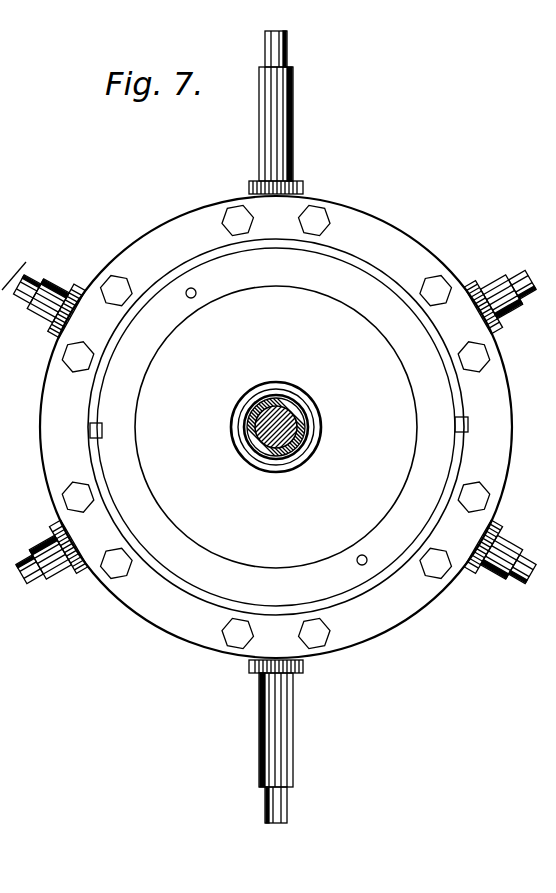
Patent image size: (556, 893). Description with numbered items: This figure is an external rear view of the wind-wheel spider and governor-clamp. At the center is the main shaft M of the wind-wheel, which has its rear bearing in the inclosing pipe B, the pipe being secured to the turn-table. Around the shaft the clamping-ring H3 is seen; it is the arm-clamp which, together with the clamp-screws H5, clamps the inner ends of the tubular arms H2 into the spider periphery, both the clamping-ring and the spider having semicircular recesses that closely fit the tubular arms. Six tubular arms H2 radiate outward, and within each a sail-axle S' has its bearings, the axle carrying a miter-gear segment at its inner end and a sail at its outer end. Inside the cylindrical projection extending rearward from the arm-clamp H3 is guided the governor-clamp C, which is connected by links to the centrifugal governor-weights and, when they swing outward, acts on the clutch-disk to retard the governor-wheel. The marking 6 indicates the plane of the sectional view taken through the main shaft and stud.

The clamping-ring H3 is at (276, 427).
The governor-clamp C is at (359, 555).
The inclosing pipe B is at (306, 429).
The main shaft M is at (278, 424).
The tubular arm H2 is at (279, 116).
The sail-axle S' is at (268, 427).
The clamp-screws H5 is at (310, 222).
The section line indicator 6 is at (3, 262).